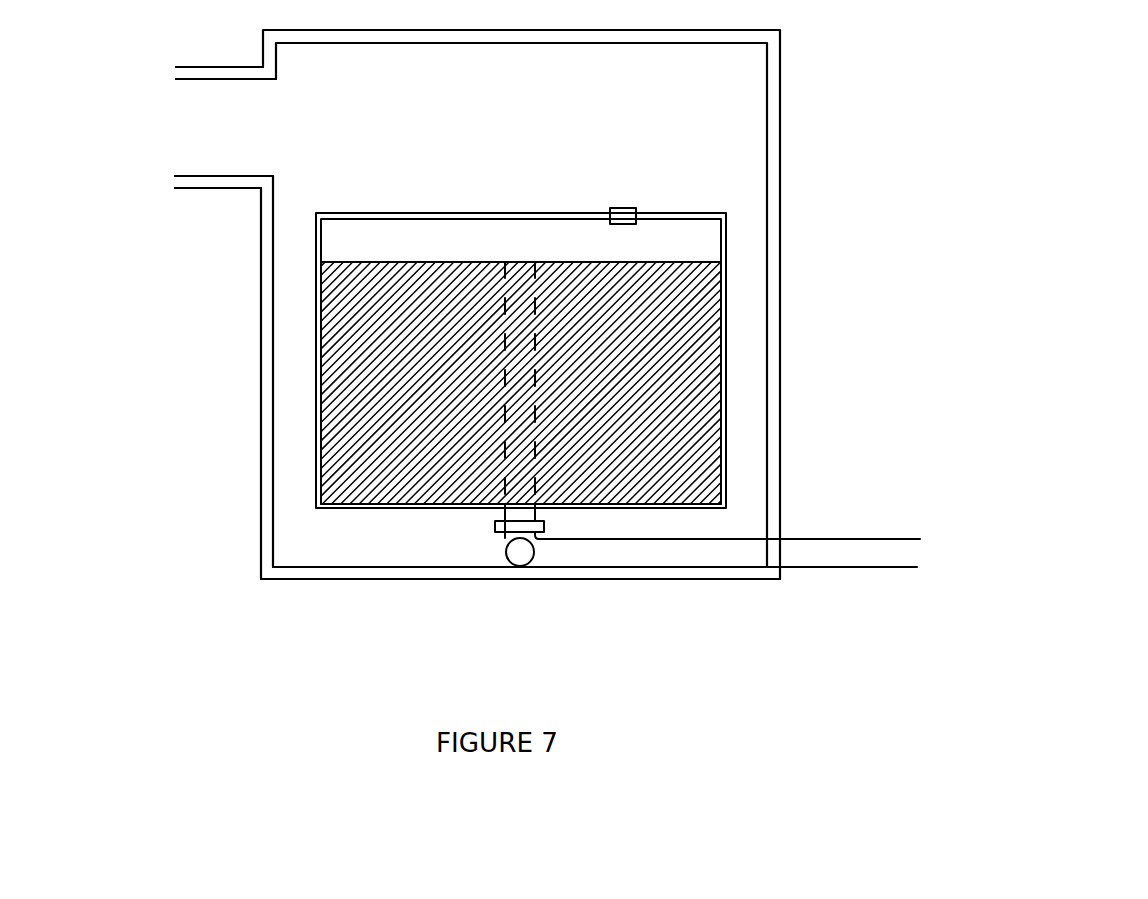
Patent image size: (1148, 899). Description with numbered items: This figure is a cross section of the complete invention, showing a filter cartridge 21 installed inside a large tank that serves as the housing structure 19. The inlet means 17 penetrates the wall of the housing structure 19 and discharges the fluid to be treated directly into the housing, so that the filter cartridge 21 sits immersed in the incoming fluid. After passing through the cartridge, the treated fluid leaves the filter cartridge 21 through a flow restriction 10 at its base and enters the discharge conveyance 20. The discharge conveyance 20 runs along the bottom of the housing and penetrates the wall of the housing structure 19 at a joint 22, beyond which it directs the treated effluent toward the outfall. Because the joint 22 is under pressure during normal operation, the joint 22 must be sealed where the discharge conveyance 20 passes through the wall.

The flow restriction 10 is at (491, 535).
The inlet means 17 is at (210, 152).
The housing structure 19 is at (257, 581).
The discharge conveyance 20 is at (658, 558).
The filter cartridge 21 is at (650, 331).
The joint 22 is at (782, 535).